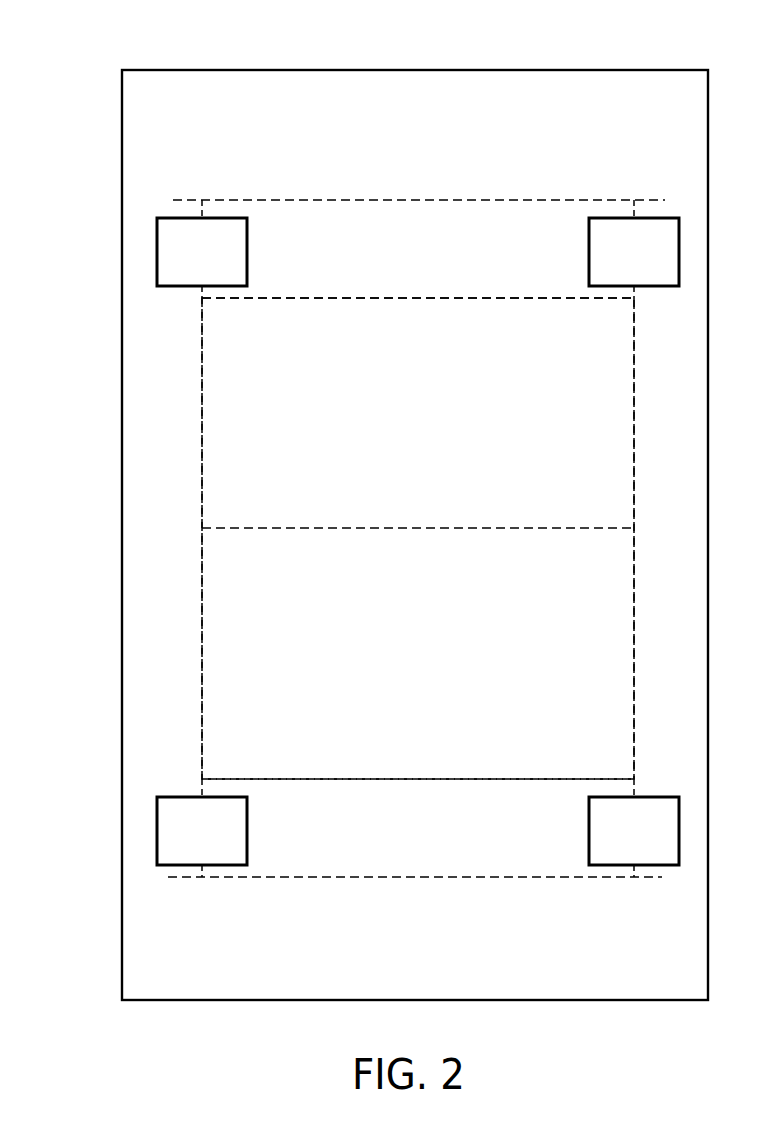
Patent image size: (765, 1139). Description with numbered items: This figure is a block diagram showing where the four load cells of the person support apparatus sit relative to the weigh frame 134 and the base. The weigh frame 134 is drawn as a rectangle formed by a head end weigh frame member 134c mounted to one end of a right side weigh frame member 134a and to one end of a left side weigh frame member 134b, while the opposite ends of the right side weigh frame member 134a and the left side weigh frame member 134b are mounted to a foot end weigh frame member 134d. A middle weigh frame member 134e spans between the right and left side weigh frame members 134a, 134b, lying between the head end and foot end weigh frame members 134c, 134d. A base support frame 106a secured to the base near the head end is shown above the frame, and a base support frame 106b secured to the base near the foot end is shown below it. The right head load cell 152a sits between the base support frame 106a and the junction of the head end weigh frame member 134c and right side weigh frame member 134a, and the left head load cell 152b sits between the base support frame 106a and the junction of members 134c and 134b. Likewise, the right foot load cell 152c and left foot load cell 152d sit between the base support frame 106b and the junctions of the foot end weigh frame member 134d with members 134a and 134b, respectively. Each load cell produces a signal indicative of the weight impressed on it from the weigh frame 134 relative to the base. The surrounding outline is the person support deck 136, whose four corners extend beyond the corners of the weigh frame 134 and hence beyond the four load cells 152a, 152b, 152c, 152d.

The person support deck 136 is at (633, 70).
The weigh frame 134 is at (148, 453).
The right side weigh frame member 134a is at (203, 412).
The left side weigh frame member 134b is at (633, 645).
The head end weigh frame member 134c is at (418, 298).
The foot end weigh frame member 134d is at (418, 779).
The middle weigh frame member 134e is at (416, 528).
The base support frame 106a is at (416, 200).
The base support frame 106b is at (418, 877).
The right head load cell (RHLC) 152a is at (247, 251).
The left head load cell (LHLC) 152b is at (589, 251).
The right foot load cell (RFLC) 152c is at (247, 831).
The left foot load cell (LFLC) 152d is at (589, 831).